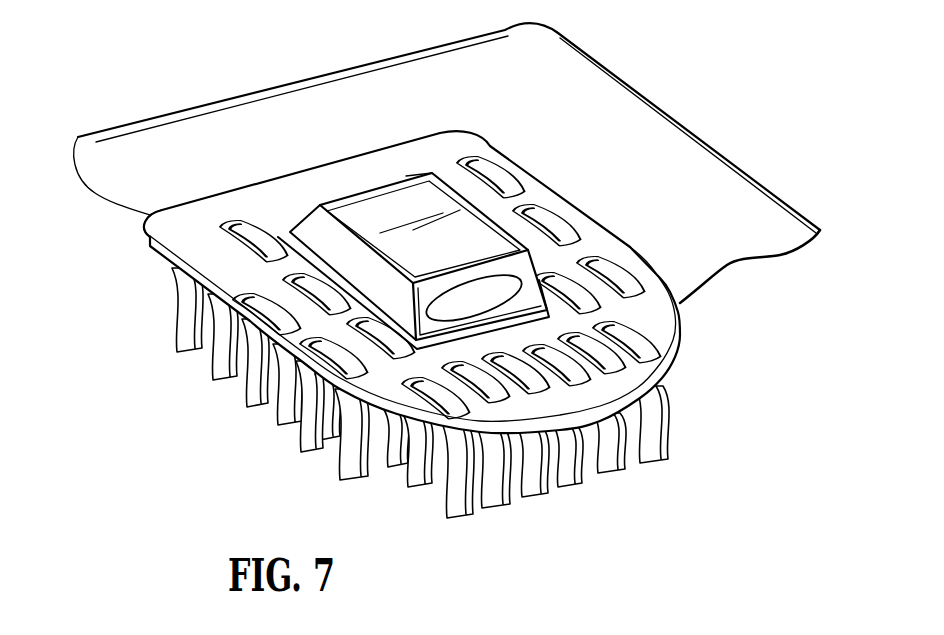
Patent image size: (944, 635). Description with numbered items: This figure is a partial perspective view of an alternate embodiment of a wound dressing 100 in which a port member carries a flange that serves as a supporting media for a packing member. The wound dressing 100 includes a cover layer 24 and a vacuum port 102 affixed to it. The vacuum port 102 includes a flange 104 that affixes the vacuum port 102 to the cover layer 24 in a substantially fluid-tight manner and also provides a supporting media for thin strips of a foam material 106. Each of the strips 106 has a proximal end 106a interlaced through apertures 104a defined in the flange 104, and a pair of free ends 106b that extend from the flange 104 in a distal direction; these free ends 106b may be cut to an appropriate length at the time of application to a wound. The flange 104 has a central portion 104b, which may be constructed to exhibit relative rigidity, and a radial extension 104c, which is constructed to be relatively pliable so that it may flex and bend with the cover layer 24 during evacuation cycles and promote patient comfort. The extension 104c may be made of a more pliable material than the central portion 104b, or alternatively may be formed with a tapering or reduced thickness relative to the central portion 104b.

The cover layer 24 is at (641, 100).
The wound dressing 100 is at (472, 270).
The vacuum port 102 is at (491, 129).
The flange 104 is at (414, 282).
The apertures 104a is at (663, 366).
The central portion 104b is at (314, 255).
The radial extension 104c is at (163, 219).
The strips of foam material 106 is at (625, 272).
The proximal end 106a is at (216, 238).
The free ends 106b is at (185, 351).